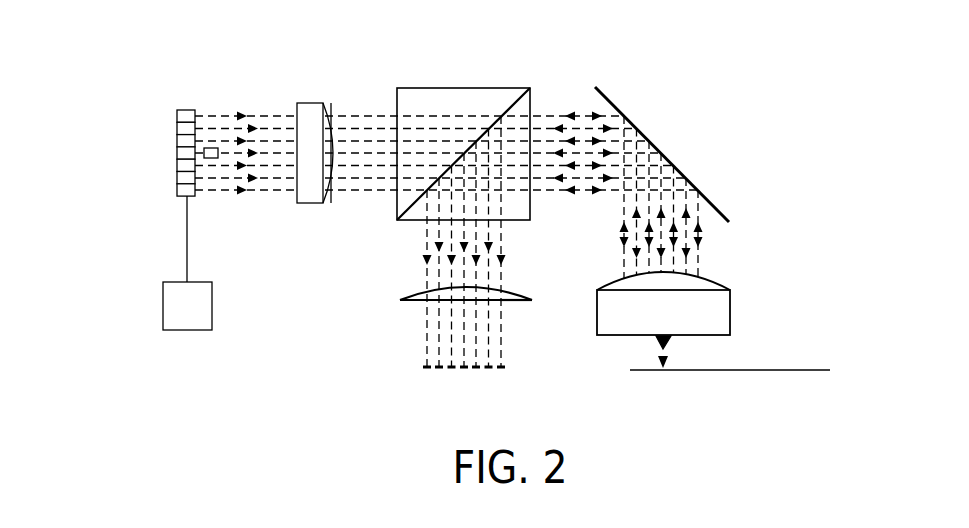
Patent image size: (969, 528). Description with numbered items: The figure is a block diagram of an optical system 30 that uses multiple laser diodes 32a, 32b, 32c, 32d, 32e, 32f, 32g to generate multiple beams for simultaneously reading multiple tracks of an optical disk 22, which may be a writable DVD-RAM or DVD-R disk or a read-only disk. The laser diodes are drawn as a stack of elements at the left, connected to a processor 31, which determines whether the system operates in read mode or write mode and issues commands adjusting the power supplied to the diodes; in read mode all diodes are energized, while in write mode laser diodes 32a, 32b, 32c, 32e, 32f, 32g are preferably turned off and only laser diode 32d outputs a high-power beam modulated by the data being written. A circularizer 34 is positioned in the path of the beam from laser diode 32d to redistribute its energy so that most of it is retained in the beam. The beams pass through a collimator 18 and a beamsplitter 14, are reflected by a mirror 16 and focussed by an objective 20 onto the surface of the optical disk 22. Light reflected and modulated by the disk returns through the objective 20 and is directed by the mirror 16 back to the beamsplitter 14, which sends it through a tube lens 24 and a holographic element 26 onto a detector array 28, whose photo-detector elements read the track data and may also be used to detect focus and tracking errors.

The beamsplitter 14 is at (442, 87).
The mirror 16 is at (632, 120).
The collimator 18 is at (312, 204).
The objective 20 is at (732, 297).
The optical disk 22 is at (760, 372).
The tube lens 24 is at (400, 299).
The holographic element 26 is at (517, 307).
The detector array 28 is at (438, 372).
The optical system 30 is at (778, 102).
The processor 31 is at (222, 303).
The laser diode 32a is at (186, 109).
The laser diode 32b is at (177, 130).
The laser diode 32c is at (177, 142).
The laser diode 32d is at (177, 154).
The laser diode 32e is at (177, 167).
The laser diode 32f is at (177, 177).
The laser diode 32g is at (178, 199).
The circularizer 34 is at (212, 158).